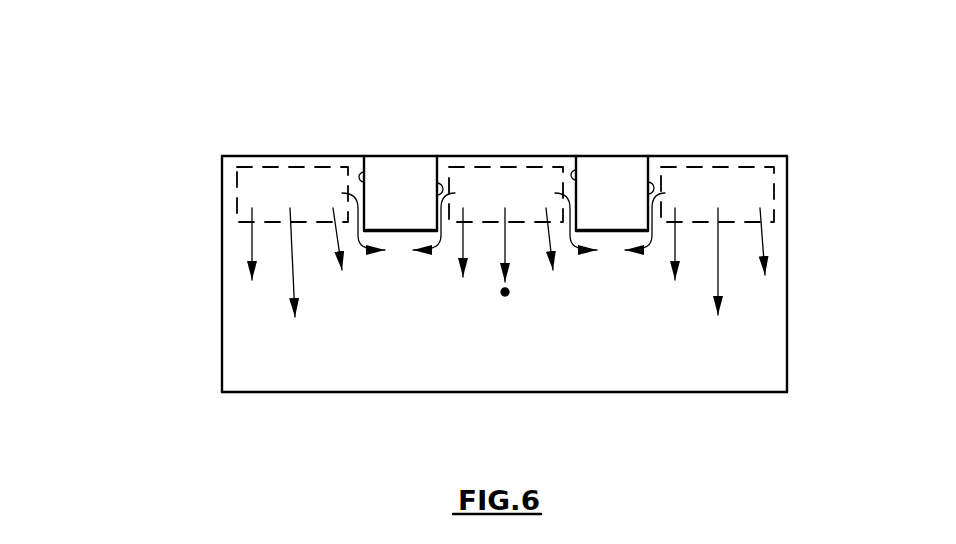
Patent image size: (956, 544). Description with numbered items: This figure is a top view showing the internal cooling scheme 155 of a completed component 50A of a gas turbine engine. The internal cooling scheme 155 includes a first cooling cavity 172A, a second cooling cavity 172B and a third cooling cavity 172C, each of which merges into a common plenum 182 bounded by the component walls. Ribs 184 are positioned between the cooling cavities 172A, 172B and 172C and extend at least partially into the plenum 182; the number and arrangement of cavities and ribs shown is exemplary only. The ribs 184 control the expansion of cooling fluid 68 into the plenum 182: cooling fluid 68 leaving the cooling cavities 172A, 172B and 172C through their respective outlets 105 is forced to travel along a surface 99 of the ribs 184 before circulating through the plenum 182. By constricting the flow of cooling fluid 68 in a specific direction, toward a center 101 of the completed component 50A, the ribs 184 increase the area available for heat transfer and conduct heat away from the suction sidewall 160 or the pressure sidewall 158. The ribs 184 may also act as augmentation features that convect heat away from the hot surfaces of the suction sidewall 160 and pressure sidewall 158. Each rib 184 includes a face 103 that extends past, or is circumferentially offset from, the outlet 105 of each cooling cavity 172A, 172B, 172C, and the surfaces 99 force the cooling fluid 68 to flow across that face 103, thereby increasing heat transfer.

The completed component 50A is at (496, 262).
The internal cooling scheme 155 is at (220, 300).
The pressure sidewall 158 is at (485, 393).
The suction sidewall 160 is at (735, 155).
The plenum 182 is at (618, 370).
The outlet 105 is at (507, 155).
The first cooling cavity 172A is at (260, 177).
The second cooling cavity 172B is at (475, 155).
The third cooling cavity 172C is at (752, 155).
The ribs 184 is at (515, 226).
The face 103 is at (408, 232).
The surface 99 is at (437, 195).
The center 101 is at (508, 296).
The cooling fluid 68 is at (295, 317).